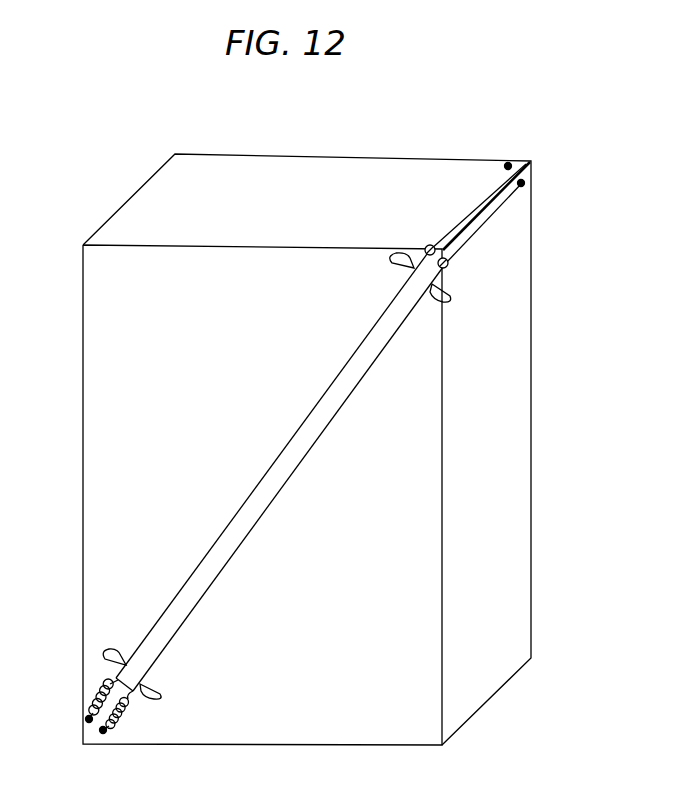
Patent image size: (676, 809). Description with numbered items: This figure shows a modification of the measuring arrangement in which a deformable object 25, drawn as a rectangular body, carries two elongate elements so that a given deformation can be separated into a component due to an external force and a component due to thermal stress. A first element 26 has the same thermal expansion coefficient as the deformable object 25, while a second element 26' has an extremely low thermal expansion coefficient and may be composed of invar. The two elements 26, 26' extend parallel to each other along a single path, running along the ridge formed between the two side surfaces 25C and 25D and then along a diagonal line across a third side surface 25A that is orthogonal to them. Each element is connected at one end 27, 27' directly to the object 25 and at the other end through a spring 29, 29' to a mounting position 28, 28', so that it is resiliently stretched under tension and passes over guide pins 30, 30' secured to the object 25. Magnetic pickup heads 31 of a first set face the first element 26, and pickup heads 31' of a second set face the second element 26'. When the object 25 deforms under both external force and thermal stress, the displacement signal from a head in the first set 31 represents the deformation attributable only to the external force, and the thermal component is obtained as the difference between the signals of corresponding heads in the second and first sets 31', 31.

The deformable object 25 is at (347, 745).
The side surface 25A is at (223, 451).
The side surface 25C is at (347, 201).
The side surface 25D is at (513, 428).
The first element 26 is at (323, 426).
The second element 26' is at (289, 477).
The end 27 is at (489, 177).
The end 27' is at (522, 222).
The mounting position 28 is at (52, 726).
The mounting position 28' is at (123, 762).
The spring 29 is at (64, 695).
The spring 29' is at (150, 715).
The guide pin 30 is at (430, 216).
The guide pin 30' is at (479, 270).
The magnetic pickup head 31 is at (301, 438).
The magnetic pickup head 31' is at (186, 685).